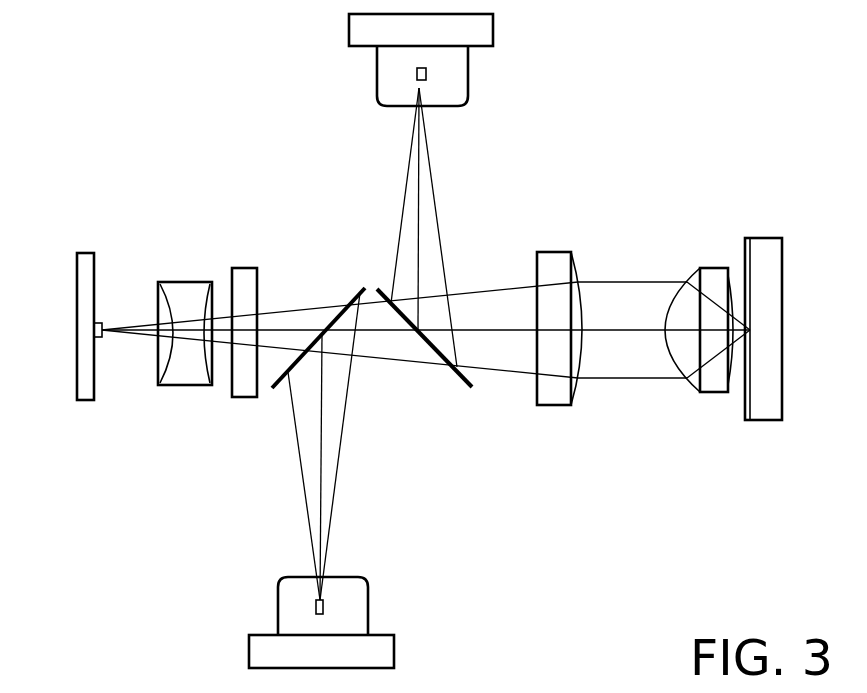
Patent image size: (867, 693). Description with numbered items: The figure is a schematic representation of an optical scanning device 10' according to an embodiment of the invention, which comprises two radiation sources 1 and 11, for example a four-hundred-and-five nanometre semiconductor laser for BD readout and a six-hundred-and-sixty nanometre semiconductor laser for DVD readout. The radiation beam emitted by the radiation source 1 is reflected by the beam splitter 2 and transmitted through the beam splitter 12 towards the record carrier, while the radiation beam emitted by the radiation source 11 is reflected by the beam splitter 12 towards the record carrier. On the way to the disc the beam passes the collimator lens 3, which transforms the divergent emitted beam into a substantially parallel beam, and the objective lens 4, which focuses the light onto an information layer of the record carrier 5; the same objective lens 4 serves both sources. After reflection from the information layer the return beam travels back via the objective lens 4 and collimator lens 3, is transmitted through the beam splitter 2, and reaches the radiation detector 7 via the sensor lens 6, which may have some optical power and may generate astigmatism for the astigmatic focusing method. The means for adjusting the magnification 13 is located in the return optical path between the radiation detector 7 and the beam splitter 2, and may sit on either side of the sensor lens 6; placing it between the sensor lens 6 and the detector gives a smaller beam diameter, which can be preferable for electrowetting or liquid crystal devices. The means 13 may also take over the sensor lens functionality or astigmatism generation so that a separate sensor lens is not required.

The radiation source 1 is at (249, 652).
The beam splitter 2 is at (362, 288).
The collimator lens 3 is at (550, 252).
The objective lens 4 is at (714, 268).
The record carrier 5 is at (762, 238).
The sensor lens 6 is at (185, 282).
The radiation detector 7 is at (77, 327).
The optical scanning device 10' is at (98, 570).
The radiation source 11 is at (377, 72).
The beam splitter 12 is at (460, 383).
The means for adjusting the magnification 13 is at (243, 268).